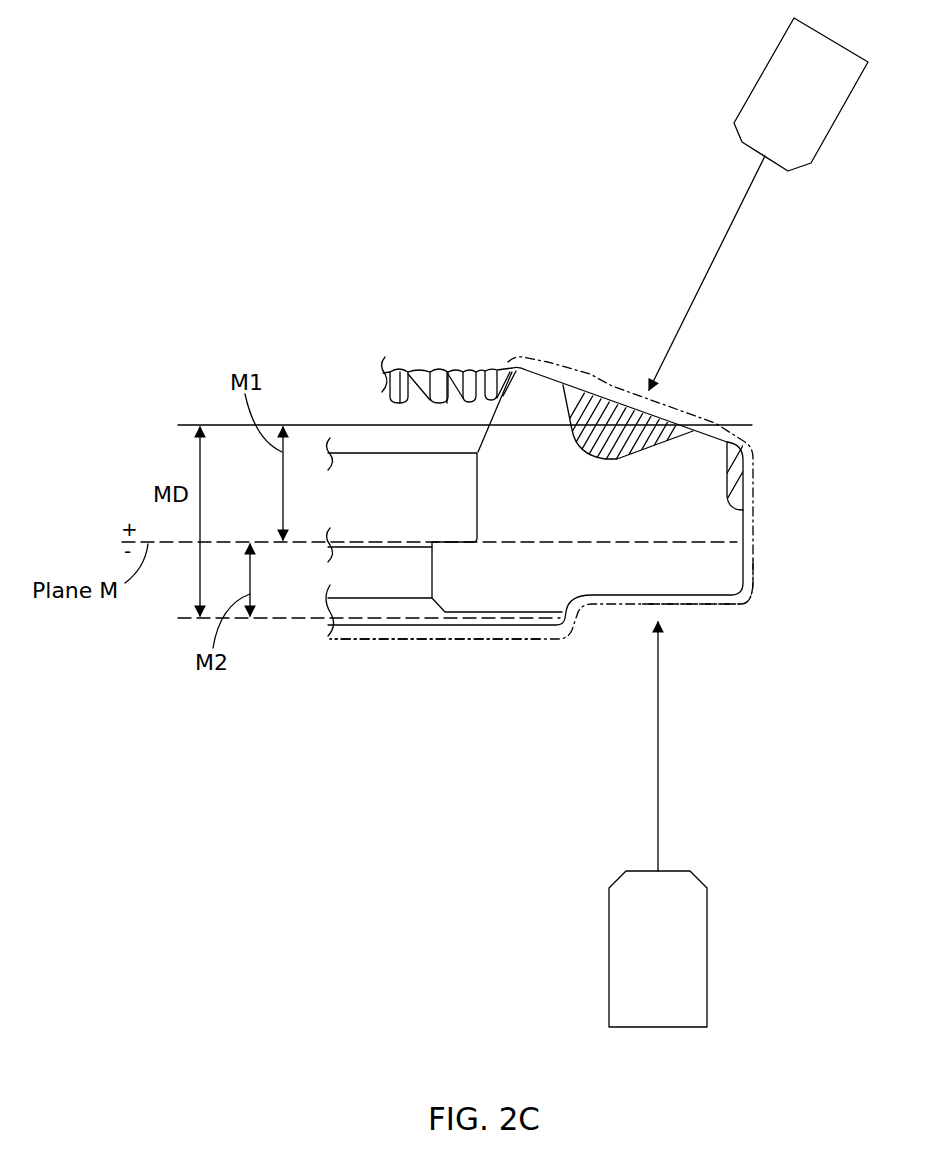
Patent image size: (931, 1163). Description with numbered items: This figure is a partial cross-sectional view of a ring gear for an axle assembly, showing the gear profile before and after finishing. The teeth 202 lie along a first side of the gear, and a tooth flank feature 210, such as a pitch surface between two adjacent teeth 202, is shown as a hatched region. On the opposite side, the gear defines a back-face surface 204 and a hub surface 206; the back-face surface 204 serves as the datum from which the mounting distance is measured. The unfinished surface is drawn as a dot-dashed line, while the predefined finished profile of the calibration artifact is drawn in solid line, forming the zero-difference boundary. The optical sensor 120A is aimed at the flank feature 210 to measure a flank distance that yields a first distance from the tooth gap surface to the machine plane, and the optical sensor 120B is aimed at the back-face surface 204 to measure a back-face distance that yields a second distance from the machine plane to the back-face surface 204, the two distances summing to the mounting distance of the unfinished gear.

The optical sensor 120A is at (763, 72).
The optical sensor 120B is at (707, 918).
The teeth 202 is at (538, 356).
The back-face surface 204 is at (701, 610).
The hub surface 206 is at (456, 643).
The tooth flank feature 210 is at (637, 418).